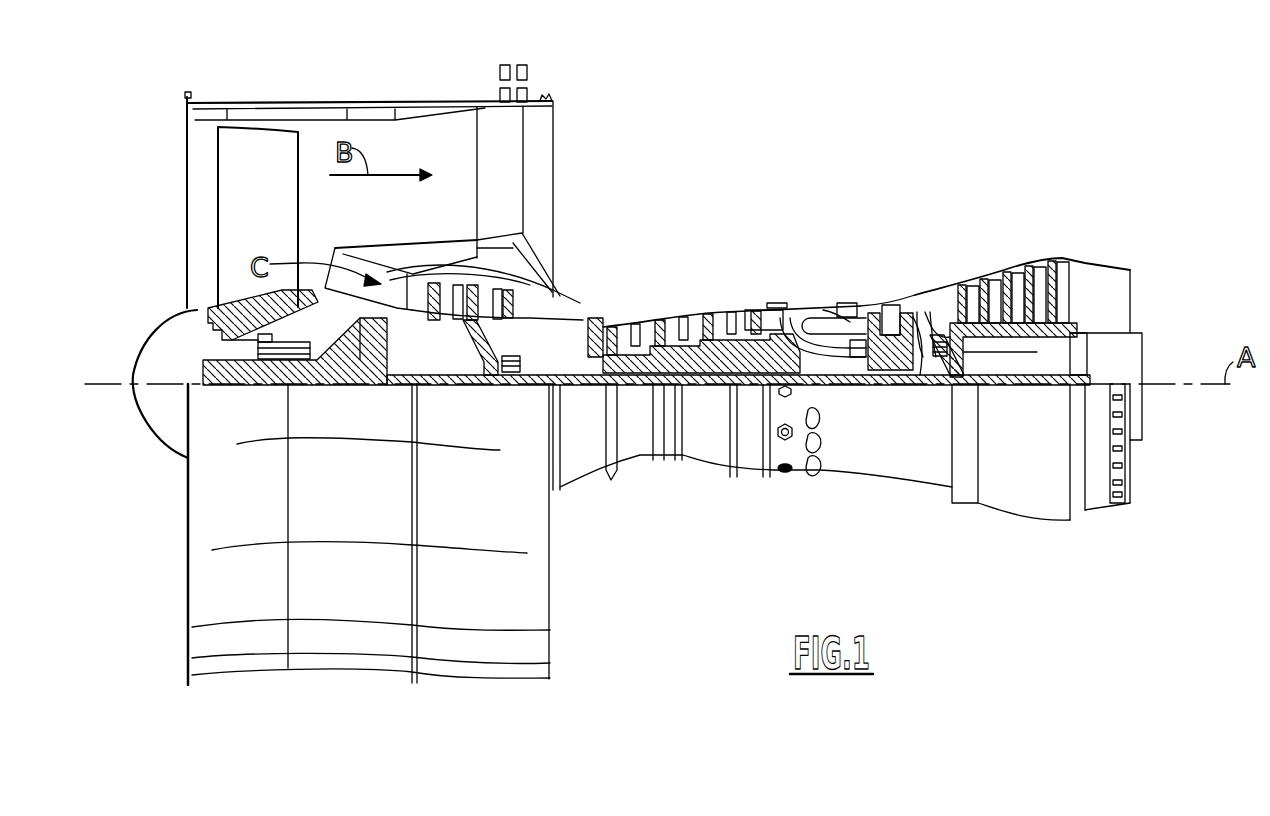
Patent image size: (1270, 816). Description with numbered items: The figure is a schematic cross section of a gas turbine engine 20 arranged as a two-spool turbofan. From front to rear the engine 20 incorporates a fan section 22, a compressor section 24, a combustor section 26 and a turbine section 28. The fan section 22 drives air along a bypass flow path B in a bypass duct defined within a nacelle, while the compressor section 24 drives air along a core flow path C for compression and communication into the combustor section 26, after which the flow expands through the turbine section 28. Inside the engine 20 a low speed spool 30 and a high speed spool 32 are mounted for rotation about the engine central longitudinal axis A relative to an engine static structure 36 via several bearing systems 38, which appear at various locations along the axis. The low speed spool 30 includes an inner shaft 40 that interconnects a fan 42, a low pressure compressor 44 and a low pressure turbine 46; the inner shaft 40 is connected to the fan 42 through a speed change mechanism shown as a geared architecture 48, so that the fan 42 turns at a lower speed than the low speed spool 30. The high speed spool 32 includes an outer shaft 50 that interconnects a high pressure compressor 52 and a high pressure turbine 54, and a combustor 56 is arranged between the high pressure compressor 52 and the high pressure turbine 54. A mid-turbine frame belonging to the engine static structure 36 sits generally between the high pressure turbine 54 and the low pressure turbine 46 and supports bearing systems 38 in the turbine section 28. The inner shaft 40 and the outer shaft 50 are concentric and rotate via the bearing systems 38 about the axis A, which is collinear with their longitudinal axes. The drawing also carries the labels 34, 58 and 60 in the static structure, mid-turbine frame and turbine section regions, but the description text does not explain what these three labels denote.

The gas turbine engine 20 is at (838, 148).
The fan section 22 is at (395, 78).
The compressor section 24 is at (410, 222).
The combustor section 26 is at (860, 222).
The turbine section 28 is at (1085, 222).
The low speed spool 30 is at (710, 400).
The high speed spool 32 is at (747, 350).
The engine static structure 34 is at (1034, 352).
The engine static structure 36 is at (750, 480).
The bearing systems 38 is at (265, 387).
The inner shaft 40 is at (566, 390).
The fan 42 is at (276, 231).
The low pressure compressor 44 is at (483, 287).
The low pressure turbine 46 is at (1018, 280).
The geared architecture 48 is at (375, 370).
The outer shaft 50 is at (833, 387).
The high pressure compressor 52 is at (680, 343).
The high pressure turbine 54 is at (892, 303).
The combustor 56 is at (823, 327).
The mid-turbine frame 58 is at (935, 290).
The airfoils 60 is at (965, 388).